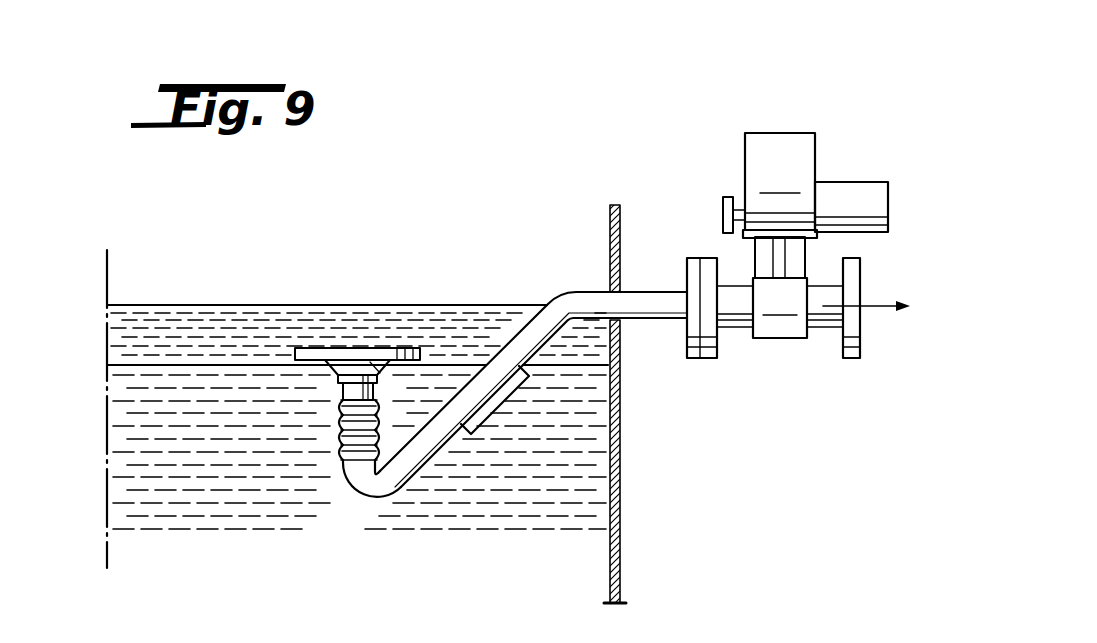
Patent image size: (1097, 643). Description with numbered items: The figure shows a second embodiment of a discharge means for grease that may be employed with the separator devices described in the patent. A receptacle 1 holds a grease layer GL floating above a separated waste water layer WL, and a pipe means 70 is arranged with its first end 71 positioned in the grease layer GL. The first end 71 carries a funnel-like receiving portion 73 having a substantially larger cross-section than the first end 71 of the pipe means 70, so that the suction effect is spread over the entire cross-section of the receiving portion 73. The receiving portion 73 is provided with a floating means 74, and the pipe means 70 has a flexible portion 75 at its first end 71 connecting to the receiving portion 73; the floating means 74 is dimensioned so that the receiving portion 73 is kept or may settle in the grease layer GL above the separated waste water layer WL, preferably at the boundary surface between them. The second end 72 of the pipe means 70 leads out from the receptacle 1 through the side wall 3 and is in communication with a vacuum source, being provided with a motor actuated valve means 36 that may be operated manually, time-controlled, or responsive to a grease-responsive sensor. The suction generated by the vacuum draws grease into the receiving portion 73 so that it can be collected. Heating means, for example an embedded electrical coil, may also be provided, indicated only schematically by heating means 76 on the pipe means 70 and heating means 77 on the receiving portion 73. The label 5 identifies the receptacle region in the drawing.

The receptacle 1 is at (670, 112).
The side wall 3 is at (621, 219).
The tank 5 is at (170, 405).
The motor actuated valve means 36 is at (793, 128).
The pipe means 70 is at (443, 448).
The first end 71 is at (352, 482).
The second end 72 is at (652, 305).
The receiving portion 73 is at (386, 367).
The floating means 74 is at (355, 351).
The flexible portion 75 is at (338, 424).
The heating means 76 is at (507, 398).
The heating means 77 is at (343, 386).
The grease layer GL is at (135, 331).
The separated waste water layer WL is at (137, 450).